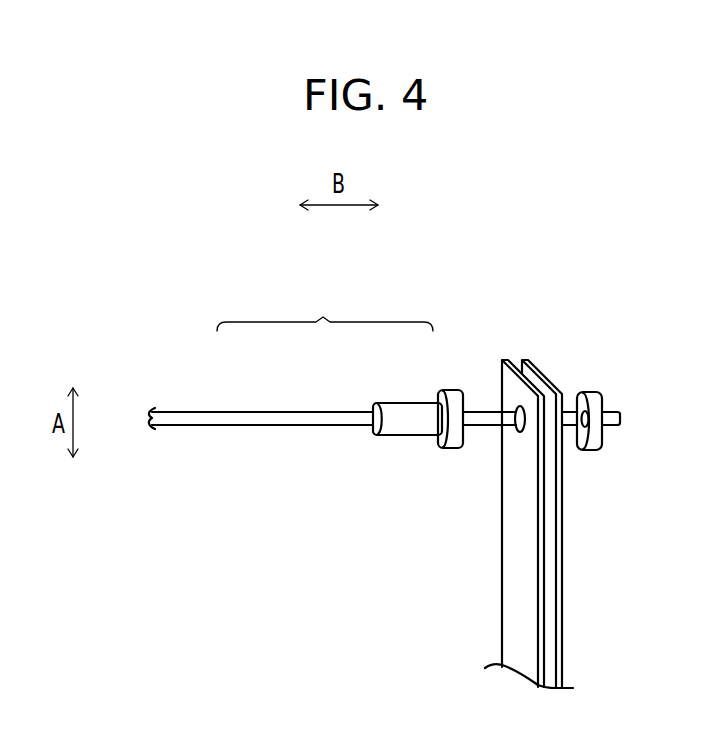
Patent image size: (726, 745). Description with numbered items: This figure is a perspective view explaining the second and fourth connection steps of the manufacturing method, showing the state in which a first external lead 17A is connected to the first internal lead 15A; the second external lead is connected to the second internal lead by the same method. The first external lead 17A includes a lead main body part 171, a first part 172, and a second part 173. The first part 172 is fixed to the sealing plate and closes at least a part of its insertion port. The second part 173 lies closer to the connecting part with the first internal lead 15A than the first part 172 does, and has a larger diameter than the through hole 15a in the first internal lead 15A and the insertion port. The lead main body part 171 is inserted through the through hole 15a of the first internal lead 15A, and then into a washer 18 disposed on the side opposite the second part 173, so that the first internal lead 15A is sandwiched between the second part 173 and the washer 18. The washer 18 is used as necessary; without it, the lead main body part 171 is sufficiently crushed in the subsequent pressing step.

The first external lead 17A is at (325, 310).
The lead main body part 171 is at (252, 416).
The first part 172 is at (406, 413).
The second part 173 is at (457, 400).
The through hole 15a is at (515, 408).
The first internal lead 15A is at (515, 562).
The washer 18 is at (594, 403).